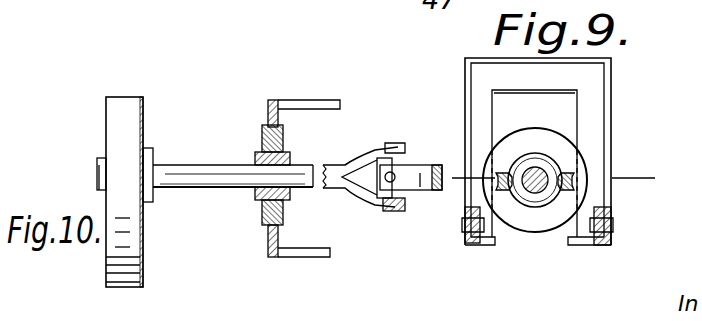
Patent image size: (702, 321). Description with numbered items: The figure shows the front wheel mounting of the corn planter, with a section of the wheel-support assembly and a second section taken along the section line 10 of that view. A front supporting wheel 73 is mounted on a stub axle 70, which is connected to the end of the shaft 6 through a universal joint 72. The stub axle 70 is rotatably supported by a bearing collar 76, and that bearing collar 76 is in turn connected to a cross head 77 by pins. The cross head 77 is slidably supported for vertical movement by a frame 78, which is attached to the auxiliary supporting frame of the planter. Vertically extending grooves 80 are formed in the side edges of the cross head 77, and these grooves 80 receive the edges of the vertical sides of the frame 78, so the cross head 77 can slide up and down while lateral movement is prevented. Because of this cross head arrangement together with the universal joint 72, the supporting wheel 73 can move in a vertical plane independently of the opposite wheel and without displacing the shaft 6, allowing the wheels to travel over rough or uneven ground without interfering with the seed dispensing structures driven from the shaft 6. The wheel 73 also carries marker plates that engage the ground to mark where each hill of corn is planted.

In FIG. 10, the front supporting wheel 73 is at (130, 113).
In FIG. 10, the stub axle 70 is at (207, 190).
In FIG. 10, the bearing collar 76 is at (266, 164).
In FIG. 9, the bearing collar 76 is at (538, 168).
In FIG. 10, the vertically extending groove 80 is at (283, 131).
In FIG. 10, the frame 78 is at (272, 107).
In FIG. 9, the frame 78 is at (470, 102).
In FIG. 10, the universal joint 72 is at (385, 202).
In FIG. 10, the shaft 6 is at (422, 192).
In FIG. 9, the shaft 6 is at (532, 193).
In FIG. 9, the cross head 77 is at (567, 158).
In FIG. 9, the section line 10 is at (452, 178).